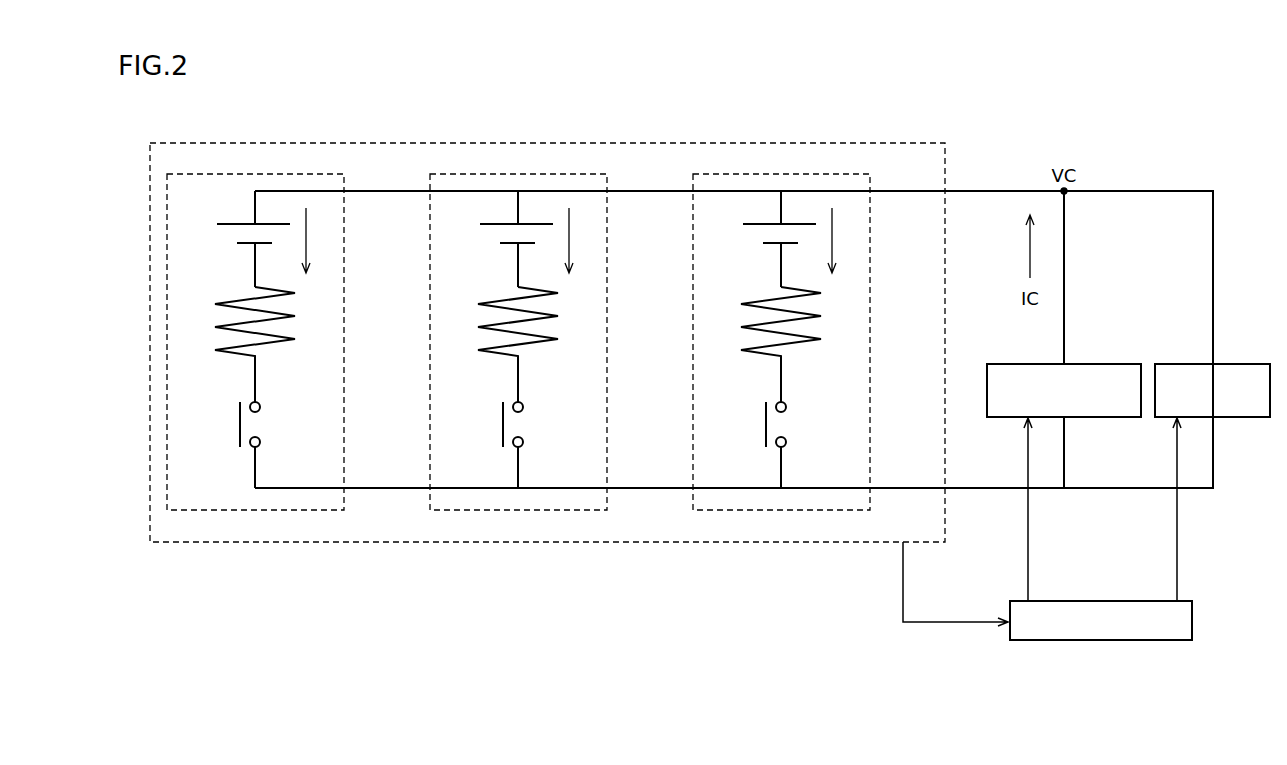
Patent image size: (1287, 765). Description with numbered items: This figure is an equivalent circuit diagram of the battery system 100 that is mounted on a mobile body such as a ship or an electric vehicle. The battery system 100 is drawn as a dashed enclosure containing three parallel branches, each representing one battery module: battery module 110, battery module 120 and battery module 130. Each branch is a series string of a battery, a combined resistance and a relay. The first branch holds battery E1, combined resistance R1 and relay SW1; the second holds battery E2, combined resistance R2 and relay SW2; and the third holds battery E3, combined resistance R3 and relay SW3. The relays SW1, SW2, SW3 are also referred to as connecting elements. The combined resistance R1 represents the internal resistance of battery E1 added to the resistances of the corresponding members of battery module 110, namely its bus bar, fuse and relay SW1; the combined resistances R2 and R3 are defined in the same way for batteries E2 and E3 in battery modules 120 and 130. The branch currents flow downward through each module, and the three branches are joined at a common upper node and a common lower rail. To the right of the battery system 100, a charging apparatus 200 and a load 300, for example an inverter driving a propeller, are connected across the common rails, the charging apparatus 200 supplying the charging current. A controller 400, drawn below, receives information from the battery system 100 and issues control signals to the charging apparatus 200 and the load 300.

The battery system 100 is at (880, 143).
The battery module 110 is at (283, 173).
The battery module 120 is at (521, 329).
The battery module 130 is at (784, 329).
The charging apparatus 200 is at (1090, 364).
The load 300 is at (1225, 364).
The controller 400 is at (1185, 601).
The battery E1 is at (237, 223).
The battery E2 is at (501, 239).
The battery E3 is at (764, 239).
The combined resistance R1 is at (237, 302).
The combined resistance R2 is at (504, 340).
The combined resistance R3 is at (767, 340).
The relay SW1 is at (238, 427).
The relay SW2 is at (479, 445).
The relay SW3 is at (742, 445).